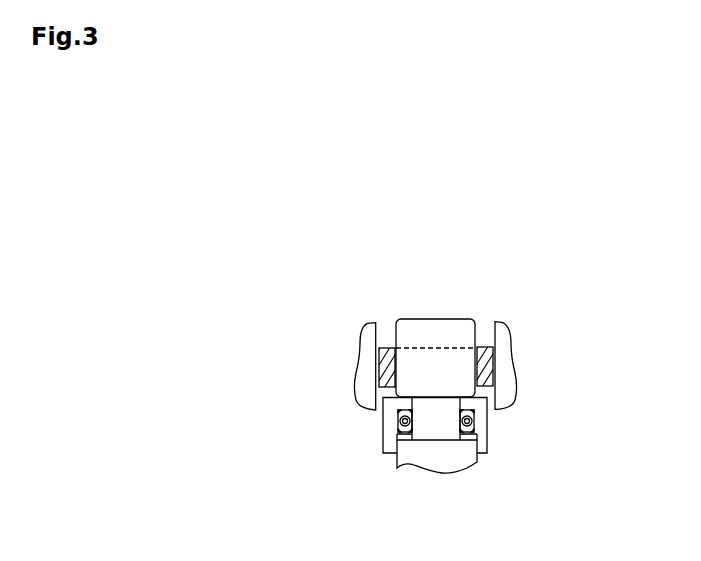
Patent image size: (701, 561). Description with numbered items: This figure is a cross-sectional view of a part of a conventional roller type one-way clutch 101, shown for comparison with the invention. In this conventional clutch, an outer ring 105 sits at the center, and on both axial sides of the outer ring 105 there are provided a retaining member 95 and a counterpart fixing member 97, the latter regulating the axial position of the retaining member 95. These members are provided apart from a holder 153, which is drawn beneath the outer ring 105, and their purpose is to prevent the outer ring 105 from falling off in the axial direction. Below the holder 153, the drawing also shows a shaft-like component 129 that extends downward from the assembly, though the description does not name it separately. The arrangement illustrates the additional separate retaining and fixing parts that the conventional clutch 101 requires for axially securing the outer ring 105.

The conventional roller type one-way clutch 101 is at (548, 263).
The outer ring 105 is at (446, 362).
The counterpart fixing member 97 is at (369, 342).
The retaining member 95 is at (380, 363).
The holder 153 is at (477, 424).
The shaft 129 is at (438, 427).